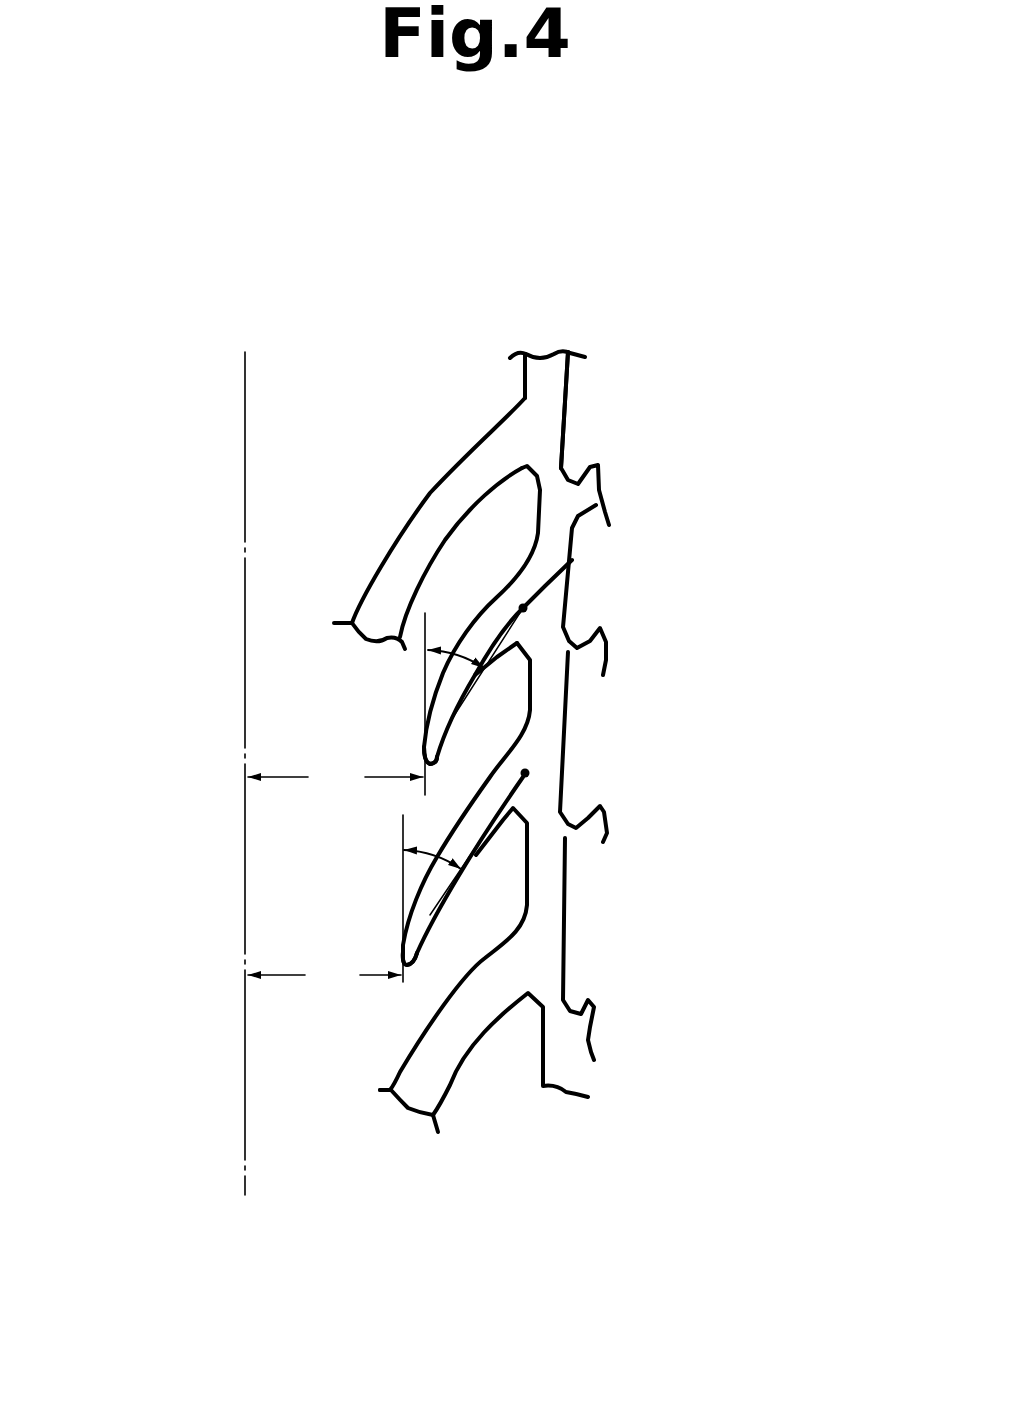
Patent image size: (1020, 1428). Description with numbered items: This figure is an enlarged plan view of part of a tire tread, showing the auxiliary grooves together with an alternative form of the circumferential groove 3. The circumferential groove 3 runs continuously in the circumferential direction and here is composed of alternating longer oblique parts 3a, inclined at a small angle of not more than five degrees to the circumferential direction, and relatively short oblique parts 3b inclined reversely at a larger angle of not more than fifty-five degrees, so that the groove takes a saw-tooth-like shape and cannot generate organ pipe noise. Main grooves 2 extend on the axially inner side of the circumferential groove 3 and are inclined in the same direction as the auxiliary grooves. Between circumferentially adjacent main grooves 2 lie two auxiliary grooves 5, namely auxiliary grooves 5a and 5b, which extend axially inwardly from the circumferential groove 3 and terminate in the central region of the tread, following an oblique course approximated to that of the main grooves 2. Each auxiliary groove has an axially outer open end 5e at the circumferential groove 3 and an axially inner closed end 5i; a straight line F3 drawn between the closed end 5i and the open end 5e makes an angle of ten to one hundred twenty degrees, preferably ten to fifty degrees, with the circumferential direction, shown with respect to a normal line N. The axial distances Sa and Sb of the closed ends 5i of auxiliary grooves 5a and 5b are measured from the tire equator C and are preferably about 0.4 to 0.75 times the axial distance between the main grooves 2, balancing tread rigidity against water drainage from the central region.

The main groove 2 is at (453, 500).
The circumferential groove 3 is at (651, 687).
The oblique part 3a is at (555, 383).
The short oblique part 3b is at (577, 467).
The auxiliary groove 5 is at (596, 715).
The auxiliary groove 5a is at (460, 832).
The auxiliary groove 5b is at (498, 632).
The axially outer open end 5e is at (530, 604).
The axially inner closed end 5i is at (418, 762).
The normal line N is at (423, 668).
The tire equator C is at (245, 777).
The axial distance Sa is at (324, 976).
The axial distance Sb is at (335, 778).
The straight line F3 is at (473, 688).